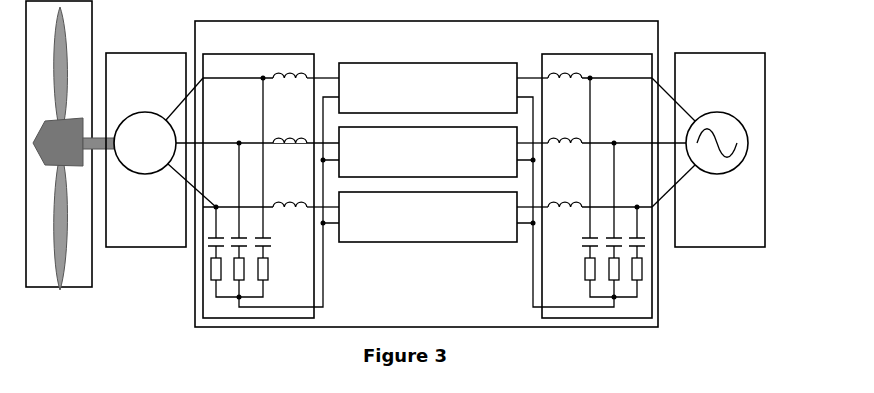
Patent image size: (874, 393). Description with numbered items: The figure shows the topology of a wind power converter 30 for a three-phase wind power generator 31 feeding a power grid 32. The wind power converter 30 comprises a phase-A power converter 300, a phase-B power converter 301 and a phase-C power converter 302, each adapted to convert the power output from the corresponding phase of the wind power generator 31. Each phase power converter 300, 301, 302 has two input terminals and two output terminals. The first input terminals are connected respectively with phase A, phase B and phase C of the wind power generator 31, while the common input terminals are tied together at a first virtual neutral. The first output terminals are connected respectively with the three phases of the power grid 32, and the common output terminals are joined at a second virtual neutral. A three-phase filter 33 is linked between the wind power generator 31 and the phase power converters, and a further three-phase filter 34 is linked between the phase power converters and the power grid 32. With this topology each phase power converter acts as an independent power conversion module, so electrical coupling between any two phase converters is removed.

The wind power converter 30 is at (467, 174).
The wind power generator 31 is at (146, 150).
The power grid 32 is at (720, 150).
The three-phase filter 33 is at (271, 177).
The three-phase filter 34 is at (584, 177).
The phase-A power converter 300 is at (428, 88).
The phase-B power converter 301 is at (428, 152).
The phase-C power converter 302 is at (428, 217).